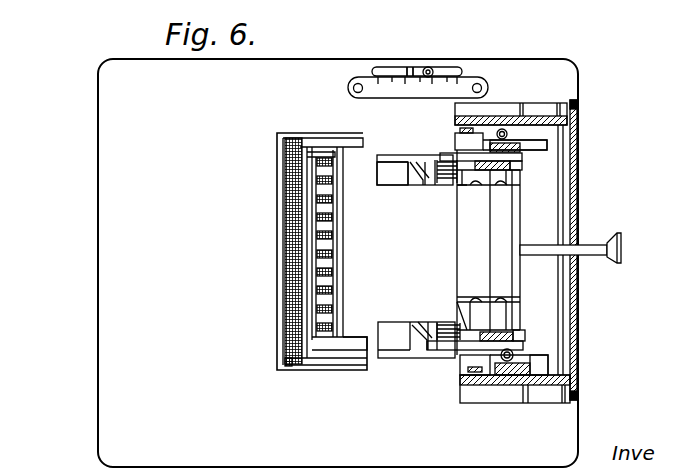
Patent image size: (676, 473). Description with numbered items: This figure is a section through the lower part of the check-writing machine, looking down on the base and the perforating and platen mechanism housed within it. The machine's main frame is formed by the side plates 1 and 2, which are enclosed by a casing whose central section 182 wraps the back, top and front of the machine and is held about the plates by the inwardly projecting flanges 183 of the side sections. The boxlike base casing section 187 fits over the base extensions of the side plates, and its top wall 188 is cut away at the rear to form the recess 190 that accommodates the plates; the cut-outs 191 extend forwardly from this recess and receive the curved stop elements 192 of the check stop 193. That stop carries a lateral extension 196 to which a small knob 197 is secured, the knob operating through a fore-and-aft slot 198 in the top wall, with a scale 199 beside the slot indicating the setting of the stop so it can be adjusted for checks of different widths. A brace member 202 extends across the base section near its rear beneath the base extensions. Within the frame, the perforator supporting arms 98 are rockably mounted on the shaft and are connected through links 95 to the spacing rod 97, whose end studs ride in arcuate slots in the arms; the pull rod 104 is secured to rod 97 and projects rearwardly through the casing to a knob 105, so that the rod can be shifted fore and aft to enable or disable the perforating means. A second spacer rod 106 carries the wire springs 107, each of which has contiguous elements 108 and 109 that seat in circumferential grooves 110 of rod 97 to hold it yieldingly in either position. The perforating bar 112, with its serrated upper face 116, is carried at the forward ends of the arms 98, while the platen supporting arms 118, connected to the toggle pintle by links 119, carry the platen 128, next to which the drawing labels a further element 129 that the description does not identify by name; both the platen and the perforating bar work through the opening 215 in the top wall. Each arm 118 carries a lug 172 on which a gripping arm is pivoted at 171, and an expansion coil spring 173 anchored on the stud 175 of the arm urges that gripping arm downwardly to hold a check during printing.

The side plate 1 is at (573, 122).
The side plate 2 is at (580, 378).
The links 95 is at (512, 171).
The spacing rod 97 is at (496, 254).
The perforator supporting arms 98 is at (522, 157).
The pull rod 104 is at (593, 248).
The knob 105 is at (622, 243).
The second spacer rod 106 is at (442, 158).
The wire springs 107 is at (460, 192).
The spring element 108 is at (499, 186).
The spring element 109 is at (486, 187).
The grooves 110 is at (516, 196).
The perforating bar 112 is at (331, 296).
The serrations 116 is at (331, 272).
The platen supporting arms 118 is at (315, 143).
The links 119 is at (547, 150).
The platen 128 is at (288, 190).
The screen frame 129 is at (290, 218).
The pivot 171 is at (455, 138).
The lug 172 is at (463, 130).
The expansion coil spring 173 is at (500, 131).
The stud 175 is at (508, 130).
The central casing section 182 is at (577, 143).
The inwardly projecting flange 183 is at (577, 110).
The base casing section 187 is at (97, 98).
The top wall 188 is at (112, 133).
The recess 190 is at (459, 249).
The cut-outs 191 is at (388, 144).
The stop elements 192 is at (418, 178).
The check stop 193 is at (407, 170).
The extension 196 is at (412, 67).
The small knob 197 is at (430, 70).
The slot 198 is at (378, 68).
The scale 199 is at (458, 83).
The brace member 202 is at (563, 305).
The opening 215 is at (277, 267).